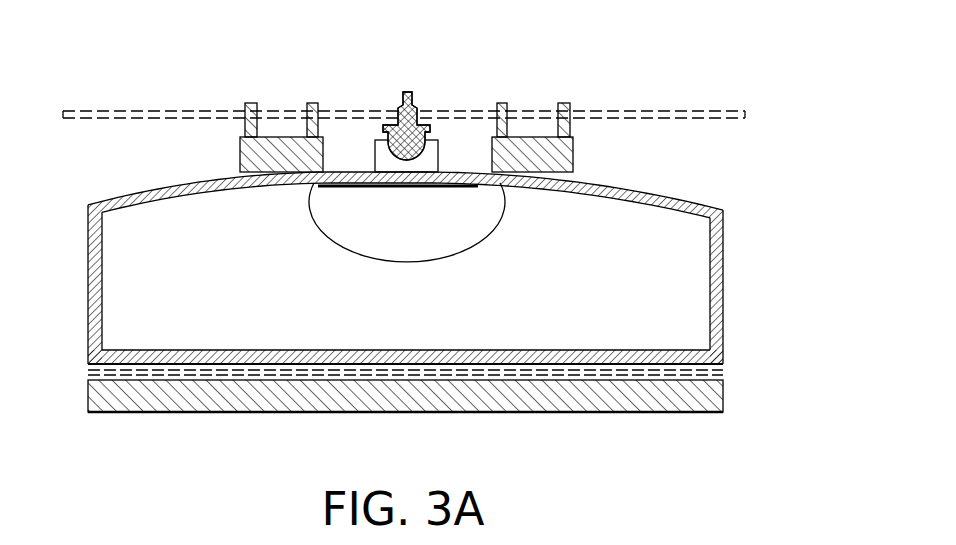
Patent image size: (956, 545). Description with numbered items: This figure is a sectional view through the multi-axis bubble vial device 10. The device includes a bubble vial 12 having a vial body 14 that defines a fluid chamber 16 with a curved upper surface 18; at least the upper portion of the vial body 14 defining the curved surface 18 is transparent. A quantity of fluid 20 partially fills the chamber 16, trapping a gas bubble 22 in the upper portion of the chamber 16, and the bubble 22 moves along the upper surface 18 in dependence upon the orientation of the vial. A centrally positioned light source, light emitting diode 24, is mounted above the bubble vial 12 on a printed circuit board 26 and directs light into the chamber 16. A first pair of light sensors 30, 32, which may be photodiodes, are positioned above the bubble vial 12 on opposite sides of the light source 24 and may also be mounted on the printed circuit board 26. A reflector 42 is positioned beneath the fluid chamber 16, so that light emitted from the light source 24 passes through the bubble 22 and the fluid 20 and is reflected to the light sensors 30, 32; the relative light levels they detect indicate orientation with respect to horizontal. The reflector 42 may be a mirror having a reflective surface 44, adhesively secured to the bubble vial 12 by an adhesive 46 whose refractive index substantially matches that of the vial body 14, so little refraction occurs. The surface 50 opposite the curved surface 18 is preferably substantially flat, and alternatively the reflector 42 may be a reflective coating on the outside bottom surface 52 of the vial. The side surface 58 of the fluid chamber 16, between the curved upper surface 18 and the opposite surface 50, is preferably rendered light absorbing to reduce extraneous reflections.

The bubble vial device 10 is at (470, 292).
The bubble vial 12 is at (90, 288).
The vial body 14 is at (675, 199).
The fluid chamber 16 is at (465, 322).
The curved upper surface 18 is at (223, 193).
The fluid 20 is at (262, 310).
The gas bubble 22 is at (385, 232).
The light emitting diode 24 is at (427, 153).
The printed circuit board 26 is at (745, 115).
The light sensor 30 is at (573, 160).
The light sensor 32 is at (240, 160).
The reflector 42 is at (727, 404).
The reflective surface 44 is at (140, 377).
The adhesive 46 is at (727, 373).
The surface opposite the curved surface 50 is at (607, 350).
The bottom surface 52 is at (273, 364).
The side surface 58 is at (103, 266).